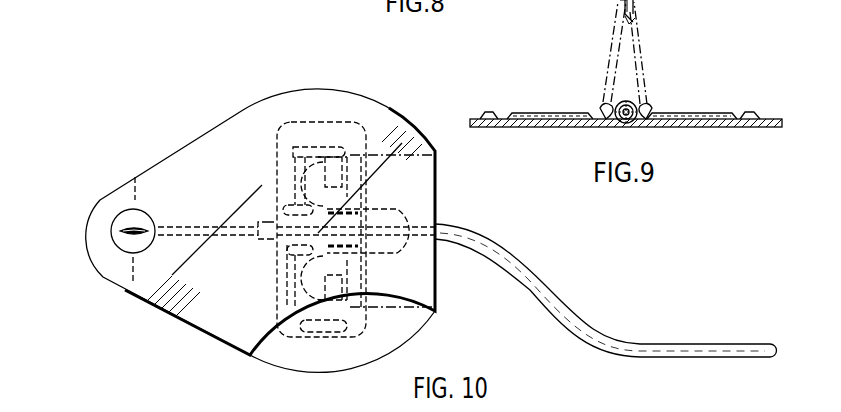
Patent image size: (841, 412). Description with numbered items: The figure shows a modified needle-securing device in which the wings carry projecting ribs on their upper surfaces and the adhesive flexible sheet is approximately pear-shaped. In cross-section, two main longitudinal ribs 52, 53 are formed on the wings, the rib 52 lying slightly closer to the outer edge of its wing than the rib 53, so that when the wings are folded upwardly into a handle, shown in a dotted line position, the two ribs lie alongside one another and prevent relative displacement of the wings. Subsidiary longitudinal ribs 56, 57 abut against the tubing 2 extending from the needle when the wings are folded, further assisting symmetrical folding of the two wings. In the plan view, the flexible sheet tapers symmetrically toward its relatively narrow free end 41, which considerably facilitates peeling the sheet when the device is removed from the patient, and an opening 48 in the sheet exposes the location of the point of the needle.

In FIG. 9, the tubing 2 is at (626, 100).
In FIG. 9, the main longitudinal rib 52 is at (625, 5).
In FIG. 9, the main longitudinal rib 53 is at (628, 23).
In FIG. 9, the subsidiary longitudinal rib 56 is at (612, 108).
In FIG. 9, the subsidiary longitudinal rib 57 is at (642, 110).
In FIG. 10, the free end of the flexible sheet 41 is at (100, 208).
In FIG. 10, the opening 48 is at (125, 245).